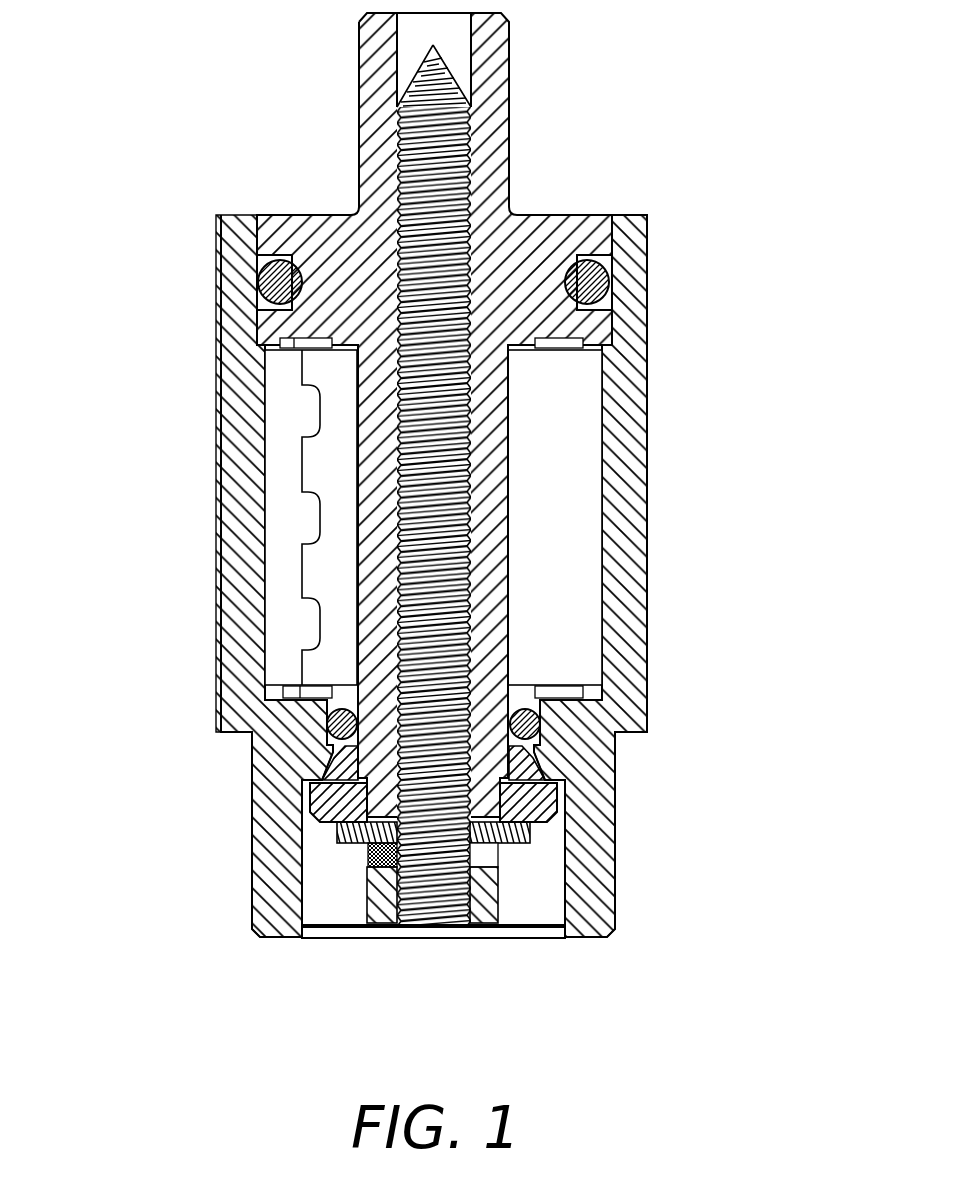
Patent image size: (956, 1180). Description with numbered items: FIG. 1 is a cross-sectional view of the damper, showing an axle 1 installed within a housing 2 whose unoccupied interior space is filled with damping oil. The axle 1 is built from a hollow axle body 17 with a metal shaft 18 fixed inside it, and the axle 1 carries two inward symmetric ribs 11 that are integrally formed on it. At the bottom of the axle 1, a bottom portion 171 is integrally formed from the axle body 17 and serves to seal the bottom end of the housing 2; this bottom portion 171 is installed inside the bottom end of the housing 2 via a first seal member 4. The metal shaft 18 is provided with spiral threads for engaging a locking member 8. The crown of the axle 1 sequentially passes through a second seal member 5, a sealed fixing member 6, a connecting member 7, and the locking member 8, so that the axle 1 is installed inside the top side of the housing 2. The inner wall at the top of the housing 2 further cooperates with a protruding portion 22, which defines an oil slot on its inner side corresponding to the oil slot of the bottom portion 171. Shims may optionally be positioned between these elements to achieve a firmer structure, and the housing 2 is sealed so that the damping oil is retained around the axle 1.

The axle 1 is at (355, 275).
The housing 2 is at (625, 492).
The first seal member 4 is at (262, 275).
The second seal member 5 is at (328, 722).
The sealed fixing member 6 is at (324, 768).
The connecting member 7 is at (537, 817).
The locking member 8 is at (482, 898).
The rib 11 is at (335, 467).
The axle body 17 is at (487, 412).
The bottom portion 171 is at (533, 255).
The metal shaft 18 is at (428, 892).
The protruding portion 22 is at (480, 930).